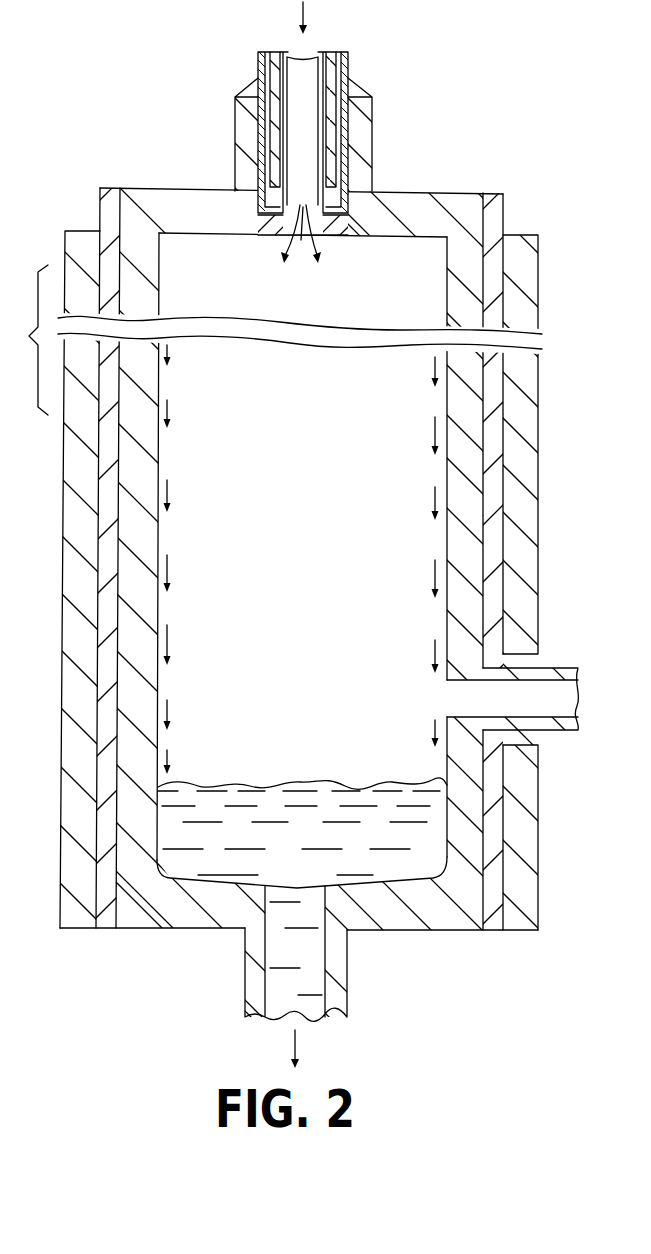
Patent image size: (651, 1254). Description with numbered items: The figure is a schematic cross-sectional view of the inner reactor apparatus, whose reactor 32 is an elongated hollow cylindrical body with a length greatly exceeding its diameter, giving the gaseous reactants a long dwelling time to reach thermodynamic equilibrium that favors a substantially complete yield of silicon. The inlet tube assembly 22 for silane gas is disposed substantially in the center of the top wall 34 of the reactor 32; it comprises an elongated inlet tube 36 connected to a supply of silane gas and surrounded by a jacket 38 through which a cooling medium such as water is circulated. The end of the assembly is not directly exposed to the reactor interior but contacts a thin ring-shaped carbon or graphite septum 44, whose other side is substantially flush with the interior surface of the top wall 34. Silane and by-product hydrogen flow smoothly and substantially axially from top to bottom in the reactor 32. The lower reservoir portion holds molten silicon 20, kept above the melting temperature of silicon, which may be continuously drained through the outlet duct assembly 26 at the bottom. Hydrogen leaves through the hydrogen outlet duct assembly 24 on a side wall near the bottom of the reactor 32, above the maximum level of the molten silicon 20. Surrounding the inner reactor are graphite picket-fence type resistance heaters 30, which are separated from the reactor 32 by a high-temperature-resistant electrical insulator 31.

The molten silicon 20 is at (435, 835).
The inlet tube assembly 22 is at (378, 93).
The hydrogen outlet duct assembly 24 is at (565, 669).
The outlet duct assembly 26 is at (340, 985).
The resistance heaters 30 is at (527, 507).
The electrical insulator 31 is at (497, 597).
The reactor 32 is at (473, 547).
The top wall 34 is at (420, 210).
The inlet tube 36 is at (347, 71).
The jacket 38 is at (347, 63).
The septum 44 is at (273, 228).